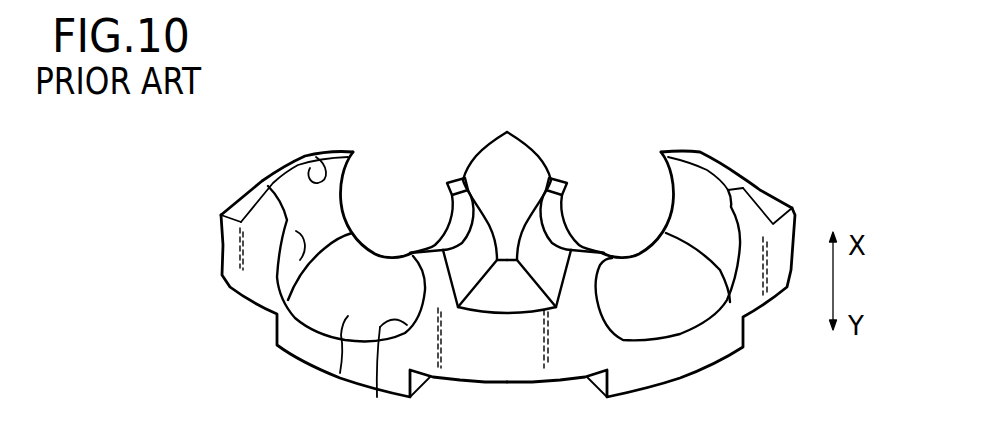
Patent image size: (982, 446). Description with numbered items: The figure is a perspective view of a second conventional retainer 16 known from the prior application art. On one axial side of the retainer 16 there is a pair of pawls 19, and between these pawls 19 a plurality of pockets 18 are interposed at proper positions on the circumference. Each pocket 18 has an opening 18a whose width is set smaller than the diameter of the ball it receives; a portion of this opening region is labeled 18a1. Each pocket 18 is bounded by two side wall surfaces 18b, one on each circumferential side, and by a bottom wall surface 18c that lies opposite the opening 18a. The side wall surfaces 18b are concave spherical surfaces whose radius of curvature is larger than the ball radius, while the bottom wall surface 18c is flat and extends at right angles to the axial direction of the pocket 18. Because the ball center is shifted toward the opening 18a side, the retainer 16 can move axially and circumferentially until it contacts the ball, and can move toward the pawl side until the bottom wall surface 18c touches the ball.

The retainer 16 is at (267, 151).
The pocket 18 is at (323, 299).
The opening 18a is at (359, 153).
The pocket side surface portion 18a1 is at (317, 158).
The side wall surface 18b is at (295, 233).
The bottom wall surface 18c is at (340, 373).
The pawl 19 is at (353, 150).